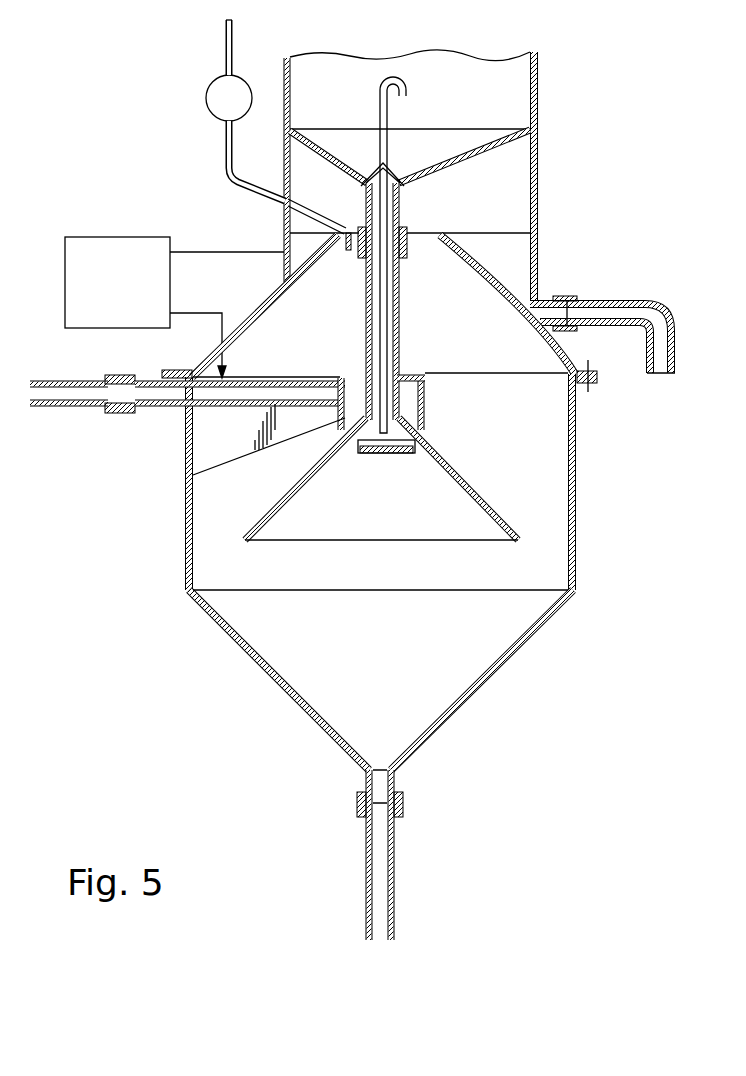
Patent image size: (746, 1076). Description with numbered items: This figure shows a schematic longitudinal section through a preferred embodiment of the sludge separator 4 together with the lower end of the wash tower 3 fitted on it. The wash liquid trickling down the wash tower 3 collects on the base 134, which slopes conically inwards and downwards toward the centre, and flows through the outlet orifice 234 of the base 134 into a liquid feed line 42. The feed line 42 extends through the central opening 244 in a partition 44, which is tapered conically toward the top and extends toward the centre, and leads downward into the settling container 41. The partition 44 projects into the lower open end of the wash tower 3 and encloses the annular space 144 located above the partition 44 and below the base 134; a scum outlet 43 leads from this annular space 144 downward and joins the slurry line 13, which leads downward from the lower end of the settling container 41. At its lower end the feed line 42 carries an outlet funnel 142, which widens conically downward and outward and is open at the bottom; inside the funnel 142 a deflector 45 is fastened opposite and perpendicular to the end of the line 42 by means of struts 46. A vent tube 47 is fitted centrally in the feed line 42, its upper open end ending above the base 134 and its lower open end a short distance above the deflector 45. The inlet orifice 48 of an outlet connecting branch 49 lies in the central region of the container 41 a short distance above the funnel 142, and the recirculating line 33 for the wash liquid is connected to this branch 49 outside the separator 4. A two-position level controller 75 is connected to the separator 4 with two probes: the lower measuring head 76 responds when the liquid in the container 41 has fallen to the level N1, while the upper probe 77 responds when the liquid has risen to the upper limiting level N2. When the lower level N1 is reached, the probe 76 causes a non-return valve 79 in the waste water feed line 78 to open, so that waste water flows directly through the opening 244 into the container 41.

The wash tower 3 is at (540, 110).
The sludge separator 4 is at (201, 631).
The slurry line 13 is at (393, 874).
The recirculating line 33 is at (80, 404).
The settling container 41 is at (380, 630).
The liquid feed line 42 is at (401, 293).
The scum outlet 43 is at (608, 300).
The partition 44 is at (262, 300).
The deflector 45 is at (370, 454).
The struts 46 is at (410, 455).
The vent tube 47 is at (379, 96).
The inlet orifice 48 is at (412, 434).
The outlet connecting branch 49 is at (296, 381).
The two-position level controller 75 is at (174, 282).
The lower measuring head 76 is at (229, 367).
The upper probe 77 is at (349, 252).
The waste water feed line 78 is at (226, 151).
The non-return valve 79 is at (212, 86).
The base 134 is at (467, 155).
The outlet funnel 142 is at (477, 501).
The annular space 144 is at (493, 177).
The outlet orifice 234 is at (401, 181).
The central opening 244 is at (428, 232).
The lower level N1 is at (446, 372).
The upper limiting level N2 is at (350, 228).